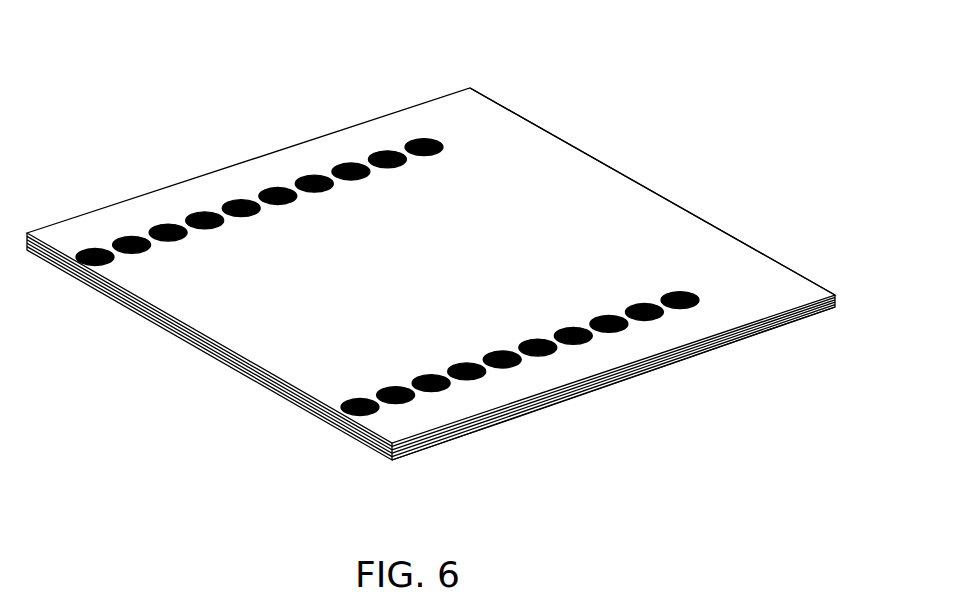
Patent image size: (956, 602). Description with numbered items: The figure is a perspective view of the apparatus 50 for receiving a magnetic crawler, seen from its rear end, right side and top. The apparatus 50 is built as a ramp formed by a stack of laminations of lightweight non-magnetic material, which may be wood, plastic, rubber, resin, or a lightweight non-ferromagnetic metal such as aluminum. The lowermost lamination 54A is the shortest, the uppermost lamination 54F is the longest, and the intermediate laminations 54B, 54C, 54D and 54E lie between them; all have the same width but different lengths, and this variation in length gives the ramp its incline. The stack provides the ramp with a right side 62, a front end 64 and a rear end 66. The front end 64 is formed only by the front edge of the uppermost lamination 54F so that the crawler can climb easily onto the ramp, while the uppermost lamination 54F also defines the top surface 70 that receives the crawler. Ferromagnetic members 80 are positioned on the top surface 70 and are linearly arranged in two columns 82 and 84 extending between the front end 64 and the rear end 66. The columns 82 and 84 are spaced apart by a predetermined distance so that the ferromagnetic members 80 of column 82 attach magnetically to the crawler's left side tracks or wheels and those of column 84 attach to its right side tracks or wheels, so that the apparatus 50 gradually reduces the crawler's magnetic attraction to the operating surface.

The apparatus 50 is at (181, 97).
The top surface 70 is at (527, 148).
The rear end 66 is at (172, 332).
The right side 62 is at (633, 293).
The front end 64 is at (708, 218).
The lowermost lamination 54A is at (430, 448).
The intermediate lamination 54B is at (505, 420).
The intermediate lamination 54C is at (575, 395).
The intermediate lamination 54D is at (652, 364).
The intermediate lamination 54E is at (730, 338).
The uppermost lamination 54F is at (805, 308).
The ferromagnetic members 80 is at (448, 229).
The column 84 is at (447, 140).
The column 82 is at (710, 293).